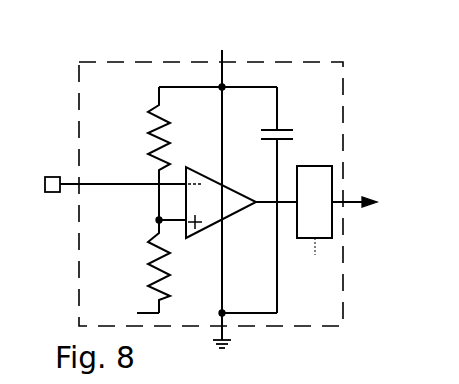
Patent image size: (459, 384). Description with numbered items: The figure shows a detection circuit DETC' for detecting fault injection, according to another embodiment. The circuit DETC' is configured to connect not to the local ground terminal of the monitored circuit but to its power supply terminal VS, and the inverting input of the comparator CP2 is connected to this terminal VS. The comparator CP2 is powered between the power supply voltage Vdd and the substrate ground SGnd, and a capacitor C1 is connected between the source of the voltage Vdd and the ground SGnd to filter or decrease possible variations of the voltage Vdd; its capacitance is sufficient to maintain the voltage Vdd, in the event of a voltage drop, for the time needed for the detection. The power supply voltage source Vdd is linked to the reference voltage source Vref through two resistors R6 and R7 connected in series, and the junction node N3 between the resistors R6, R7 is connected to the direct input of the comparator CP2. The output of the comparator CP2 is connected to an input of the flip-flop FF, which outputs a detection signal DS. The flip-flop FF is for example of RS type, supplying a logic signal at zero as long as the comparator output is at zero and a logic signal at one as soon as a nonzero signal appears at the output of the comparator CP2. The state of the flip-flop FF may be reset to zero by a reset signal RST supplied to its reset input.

The detection circuit DETC' is at (211, 194).
The power supply voltage Vdd is at (236, 50).
The resistor R6 is at (146, 129).
The junction node N3 is at (155, 221).
The resistor R7 is at (148, 262).
The reference voltage source Vref is at (125, 311).
The power supply terminal VS is at (55, 194).
The comparator CP2 is at (232, 213).
The capacitor C1 is at (295, 131).
The flip-flop FF is at (328, 213).
The reset signal RST is at (314, 258).
The detection signal DS is at (371, 202).
The substrate ground SGnd is at (232, 341).